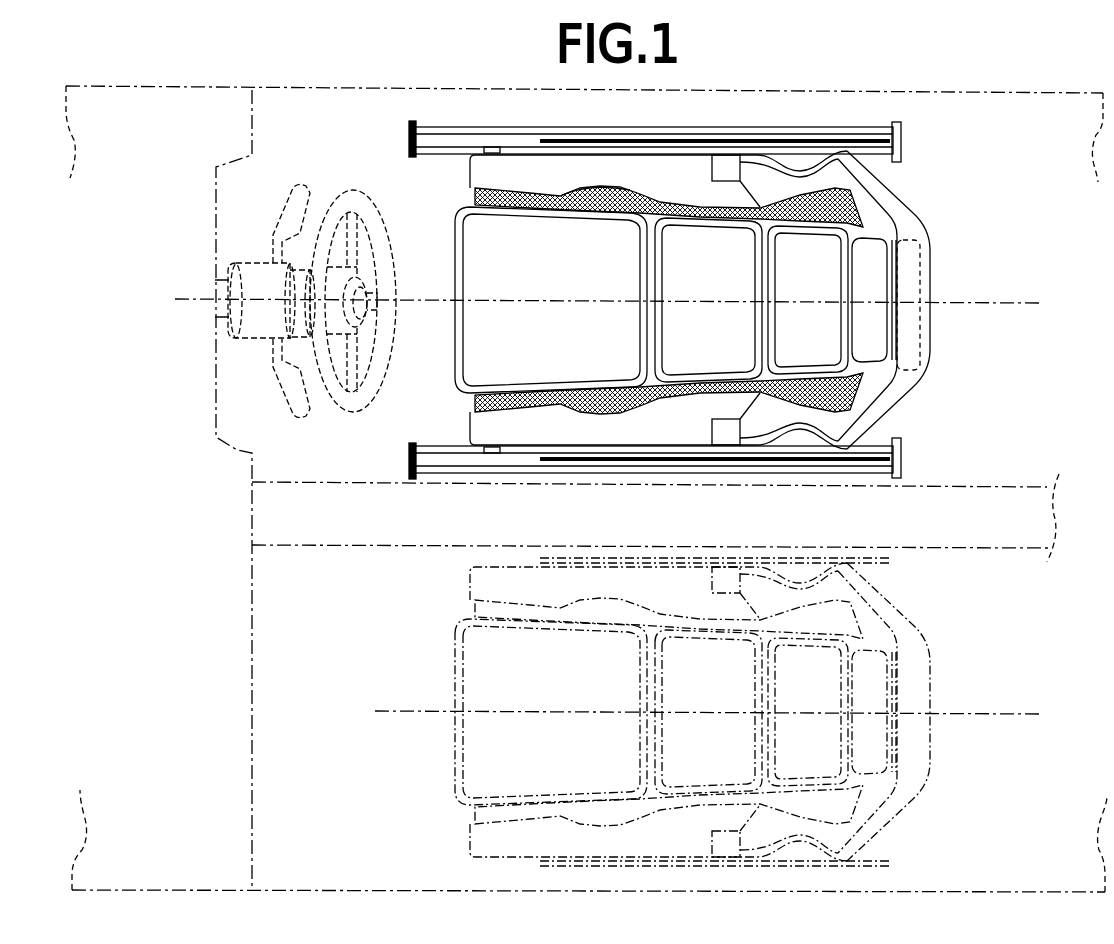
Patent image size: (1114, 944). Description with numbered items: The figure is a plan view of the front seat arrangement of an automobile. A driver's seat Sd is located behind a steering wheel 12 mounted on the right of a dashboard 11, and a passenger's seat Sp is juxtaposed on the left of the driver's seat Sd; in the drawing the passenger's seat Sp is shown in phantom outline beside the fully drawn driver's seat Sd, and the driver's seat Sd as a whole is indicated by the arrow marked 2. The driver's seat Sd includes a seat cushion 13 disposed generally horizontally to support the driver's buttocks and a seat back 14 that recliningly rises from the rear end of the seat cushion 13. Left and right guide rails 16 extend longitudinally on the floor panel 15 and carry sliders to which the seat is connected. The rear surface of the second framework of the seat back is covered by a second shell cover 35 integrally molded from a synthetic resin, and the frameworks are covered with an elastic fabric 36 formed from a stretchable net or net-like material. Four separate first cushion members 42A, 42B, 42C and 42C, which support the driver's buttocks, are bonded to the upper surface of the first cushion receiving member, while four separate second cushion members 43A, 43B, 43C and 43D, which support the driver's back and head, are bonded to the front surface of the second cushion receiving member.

The vehicle seat 2 is at (663, 317).
The driver's seat Sd is at (687, 317).
The passenger's seat Sp is at (942, 798).
The dashboard 11 is at (240, 443).
The steering wheel 12 is at (349, 192).
The seat cushion 13 is at (700, 322).
The seat back 14 is at (704, 340).
The floor panel 15 is at (438, 201).
The guide rails 16 is at (462, 132).
The second shell cover 35 is at (903, 203).
The elastic fabric 36 is at (592, 208).
The first cushion member 42A is at (524, 358).
The first cushion member 42B is at (675, 358).
The first cushion members 42C is at (669, 301).
The second cushion member 43A is at (777, 357).
The second cushion member 43B is at (877, 344).
The second cushion member 43C is at (912, 290).
The second cushion member 43D is at (777, 430).